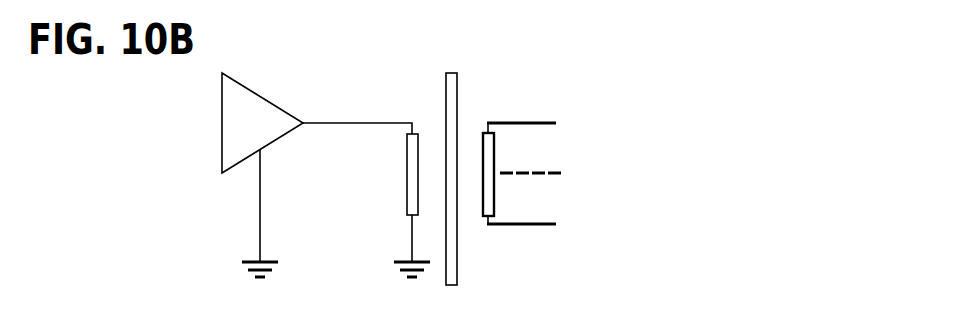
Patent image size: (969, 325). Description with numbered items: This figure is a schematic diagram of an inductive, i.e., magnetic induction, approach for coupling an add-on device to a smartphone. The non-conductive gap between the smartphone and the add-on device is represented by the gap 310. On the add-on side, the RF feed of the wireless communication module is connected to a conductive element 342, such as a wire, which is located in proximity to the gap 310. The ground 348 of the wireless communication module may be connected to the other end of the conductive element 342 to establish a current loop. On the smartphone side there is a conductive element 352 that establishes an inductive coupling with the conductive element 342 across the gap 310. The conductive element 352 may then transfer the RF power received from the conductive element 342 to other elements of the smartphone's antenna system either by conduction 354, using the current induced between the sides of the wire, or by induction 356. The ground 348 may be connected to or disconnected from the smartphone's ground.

The non-conductive gap 310 is at (458, 72).
The conductive element 342 is at (402, 164).
The ground 348 is at (390, 272).
The conductive element 352 is at (495, 193).
The conduction 354 is at (556, 123).
The induction 356 is at (564, 174).